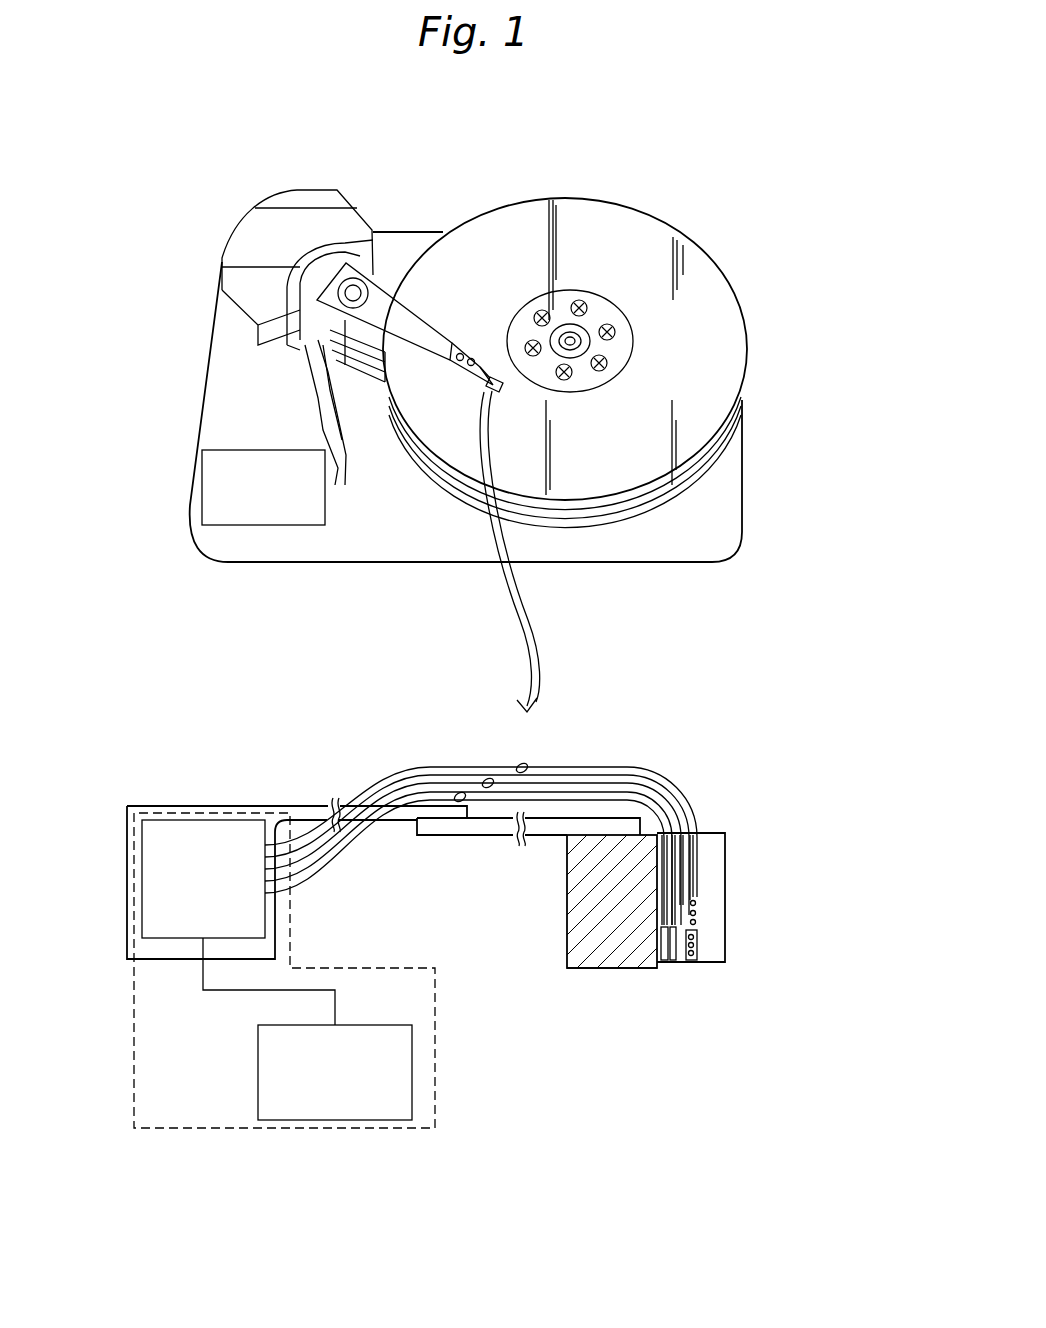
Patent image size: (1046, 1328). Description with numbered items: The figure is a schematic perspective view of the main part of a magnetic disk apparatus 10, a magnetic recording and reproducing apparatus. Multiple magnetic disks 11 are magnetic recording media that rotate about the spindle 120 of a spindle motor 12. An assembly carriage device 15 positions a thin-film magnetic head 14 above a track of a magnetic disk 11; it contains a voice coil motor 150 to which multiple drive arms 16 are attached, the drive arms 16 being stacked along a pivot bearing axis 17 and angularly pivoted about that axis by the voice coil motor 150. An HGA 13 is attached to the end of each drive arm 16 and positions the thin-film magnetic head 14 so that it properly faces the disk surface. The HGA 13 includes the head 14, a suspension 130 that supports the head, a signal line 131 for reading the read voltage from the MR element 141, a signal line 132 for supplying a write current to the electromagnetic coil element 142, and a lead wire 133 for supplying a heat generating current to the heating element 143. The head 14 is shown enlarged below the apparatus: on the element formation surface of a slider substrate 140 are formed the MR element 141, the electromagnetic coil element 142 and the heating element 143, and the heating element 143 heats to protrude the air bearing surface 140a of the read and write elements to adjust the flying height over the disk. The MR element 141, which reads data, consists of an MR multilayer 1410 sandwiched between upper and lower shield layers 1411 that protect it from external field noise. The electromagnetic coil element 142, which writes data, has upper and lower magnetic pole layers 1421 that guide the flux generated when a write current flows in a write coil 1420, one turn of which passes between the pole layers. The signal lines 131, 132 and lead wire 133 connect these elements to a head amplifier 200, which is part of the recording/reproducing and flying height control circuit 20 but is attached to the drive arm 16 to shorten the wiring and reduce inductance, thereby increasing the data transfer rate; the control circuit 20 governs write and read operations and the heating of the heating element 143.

The magnetic disk apparatus 10 is at (511, 186).
The magnetic disks 11 is at (697, 298).
The spindle motor 12 is at (555, 335).
The spindle 120 is at (578, 265).
The HGA 13 is at (478, 377).
The suspension 130 is at (490, 832).
The signal line 131 is at (458, 793).
The signal line 132 is at (520, 764).
The lead wire 133 is at (486, 779).
The thin-film magnetic head 14 is at (655, 724).
The slider substrate 140 is at (577, 938).
The air bearing surface 140a is at (612, 972).
The MR element 141 is at (654, 999).
The MR multilayer 1410 is at (668, 963).
The upper and lower shield layers 1411 is at (660, 937).
The electromagnetic coil element 142 is at (766, 1001).
The write coil 1420 is at (697, 950).
The upper and lower magnetic pole layers 1421 is at (690, 963).
The heating element 143 is at (696, 913).
The assembly carriage device 15 is at (316, 205).
The voice coil motor 150 is at (295, 327).
The drive arms 16 is at (423, 335).
The pivot bearing axis 17 is at (360, 290).
The recording/reproducing and flying height control circuit 20 is at (250, 540).
The head amplifier 200 is at (345, 350).